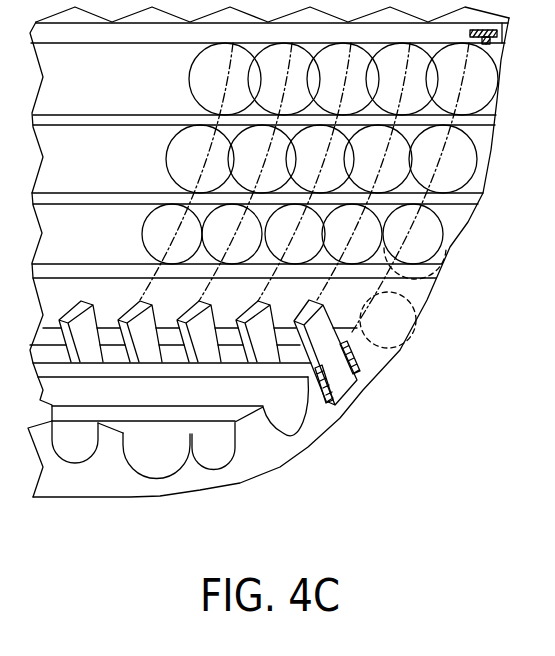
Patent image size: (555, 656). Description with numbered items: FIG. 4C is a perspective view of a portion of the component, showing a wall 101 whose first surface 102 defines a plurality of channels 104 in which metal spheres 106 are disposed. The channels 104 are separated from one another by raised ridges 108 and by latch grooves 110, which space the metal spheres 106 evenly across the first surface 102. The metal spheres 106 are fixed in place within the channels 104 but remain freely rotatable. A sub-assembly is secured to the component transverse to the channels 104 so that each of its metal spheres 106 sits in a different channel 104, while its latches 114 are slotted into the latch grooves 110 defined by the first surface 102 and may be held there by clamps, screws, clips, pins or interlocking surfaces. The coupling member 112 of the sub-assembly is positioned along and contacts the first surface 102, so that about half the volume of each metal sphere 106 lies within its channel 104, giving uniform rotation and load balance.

The wall 101 is at (463, 78).
The first surface 102 is at (292, 416).
The channels 104 is at (382, 327).
The metal spheres 106 is at (462, 168).
The ridges 108 is at (381, 267).
The latch grooves 110 is at (340, 405).
The coupling member 112 is at (418, 298).
The latches 114 is at (342, 383).